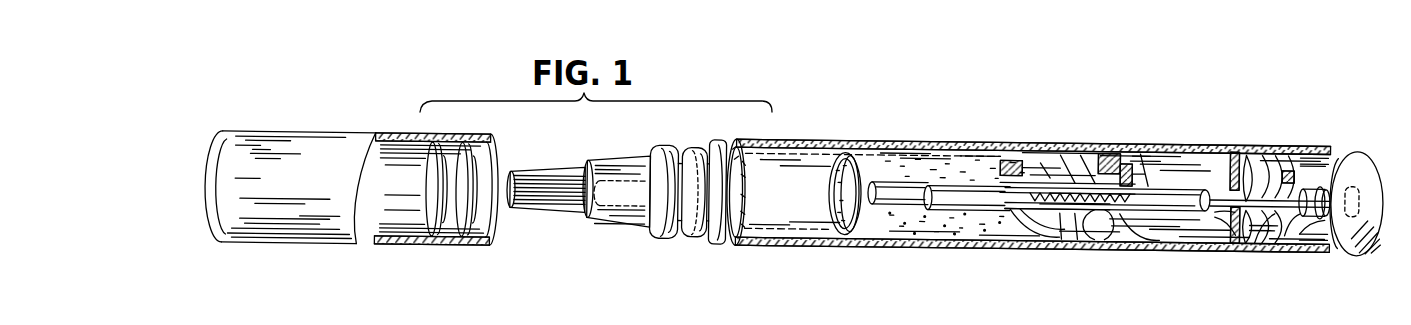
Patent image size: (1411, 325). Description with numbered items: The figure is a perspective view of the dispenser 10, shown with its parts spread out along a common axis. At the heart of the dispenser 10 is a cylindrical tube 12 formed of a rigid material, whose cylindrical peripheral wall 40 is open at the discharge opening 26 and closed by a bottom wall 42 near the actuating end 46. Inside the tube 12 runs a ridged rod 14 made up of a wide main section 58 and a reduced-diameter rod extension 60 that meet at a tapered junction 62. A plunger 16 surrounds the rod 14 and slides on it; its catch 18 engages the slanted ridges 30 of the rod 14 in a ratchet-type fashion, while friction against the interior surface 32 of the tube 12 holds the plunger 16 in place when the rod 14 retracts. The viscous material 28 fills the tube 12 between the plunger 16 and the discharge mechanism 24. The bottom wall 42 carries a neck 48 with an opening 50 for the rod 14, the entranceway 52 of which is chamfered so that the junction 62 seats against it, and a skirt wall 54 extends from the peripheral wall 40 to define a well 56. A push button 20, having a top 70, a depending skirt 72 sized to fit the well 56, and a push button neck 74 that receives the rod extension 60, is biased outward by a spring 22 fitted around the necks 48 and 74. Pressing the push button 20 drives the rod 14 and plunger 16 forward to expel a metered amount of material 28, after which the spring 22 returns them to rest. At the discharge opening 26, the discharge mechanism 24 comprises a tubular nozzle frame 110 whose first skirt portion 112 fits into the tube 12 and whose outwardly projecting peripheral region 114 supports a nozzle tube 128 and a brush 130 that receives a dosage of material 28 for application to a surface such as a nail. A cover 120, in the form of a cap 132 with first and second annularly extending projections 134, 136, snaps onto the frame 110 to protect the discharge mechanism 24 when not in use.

The dispenser 10 is at (1118, 73).
The cylindrical tube 12 is at (910, 140).
The ridged rod 14 is at (1167, 190).
The plunger 16 is at (1047, 147).
The catch 18 is at (1108, 153).
The push button 20 is at (1327, 150).
The spring 22 is at (1288, 147).
The discharge mechanism 24 is at (676, 146).
The discharge opening 26 is at (785, 158).
The viscous material 28 is at (928, 227).
The slanted ridges 30 is at (1132, 160).
The interior surface 32 is at (962, 160).
The cylindrical peripheral wall 40 is at (1077, 241).
The bottom wall 42 is at (1220, 167).
The actuating end 46 is at (1272, 250).
The neck 48 is at (1257, 220).
The opening 50 is at (1228, 208).
The entranceway 52 is at (1228, 210).
The skirt wall 54 is at (1297, 247).
The well 56 is at (1258, 170).
The main section 58 is at (975, 195).
The rod extension 60 is at (1300, 170).
The junction 62 is at (1195, 208).
The top 70 is at (1367, 180).
The skirt 72 is at (1335, 247).
The push button neck 74 is at (1318, 247).
The tubular nozzle frame 110 is at (733, 243).
The first skirt portion 112 is at (806, 236).
The outwardly projecting peripheral region 114 is at (624, 161).
The cover 120 is at (303, 128).
The nozzle tube 128 is at (628, 204).
The brush 130 is at (562, 204).
The cap 132 is at (276, 245).
The first annularly extending projection 134 is at (430, 232).
The second annularly extending projection 136 is at (452, 240).